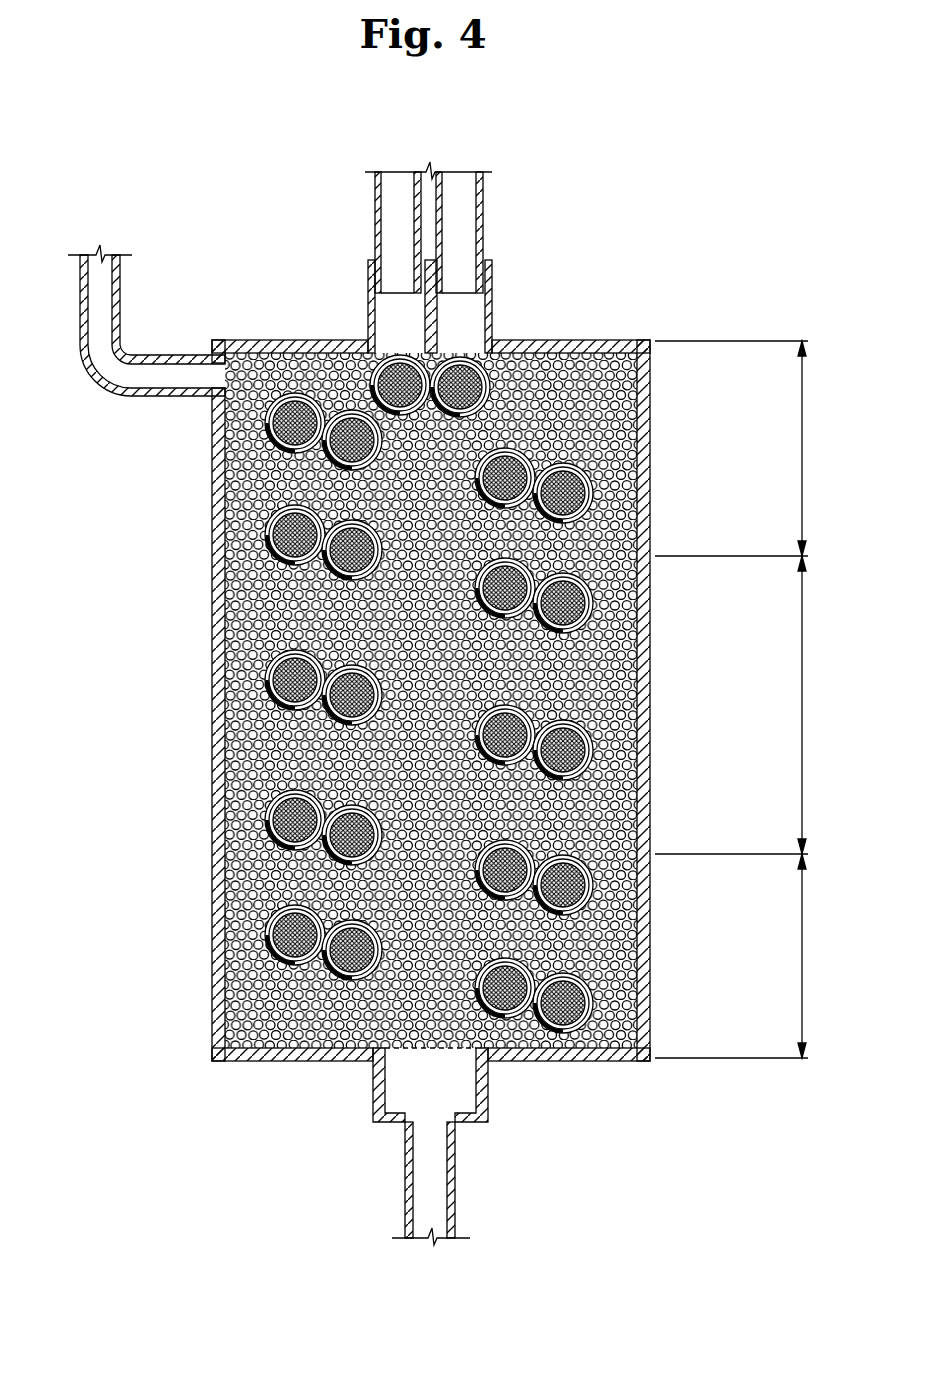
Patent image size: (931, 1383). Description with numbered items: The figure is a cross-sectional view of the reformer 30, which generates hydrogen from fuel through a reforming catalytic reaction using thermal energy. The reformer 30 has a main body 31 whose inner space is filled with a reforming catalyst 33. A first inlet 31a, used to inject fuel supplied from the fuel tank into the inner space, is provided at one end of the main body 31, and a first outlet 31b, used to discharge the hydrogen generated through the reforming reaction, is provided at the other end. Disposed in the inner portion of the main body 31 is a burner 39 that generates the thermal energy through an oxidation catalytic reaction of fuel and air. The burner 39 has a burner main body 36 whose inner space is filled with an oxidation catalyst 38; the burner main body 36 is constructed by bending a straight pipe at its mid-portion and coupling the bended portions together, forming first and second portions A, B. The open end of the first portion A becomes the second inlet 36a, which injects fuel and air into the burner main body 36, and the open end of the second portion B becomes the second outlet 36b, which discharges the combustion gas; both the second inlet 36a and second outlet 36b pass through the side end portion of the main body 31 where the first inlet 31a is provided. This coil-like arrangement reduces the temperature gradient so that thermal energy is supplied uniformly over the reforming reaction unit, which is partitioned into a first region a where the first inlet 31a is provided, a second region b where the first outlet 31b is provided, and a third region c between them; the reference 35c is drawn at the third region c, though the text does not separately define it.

The reformer 30 is at (441, 131).
The main body 31 is at (648, 792).
The first inlet 31a is at (186, 414).
The first outlet 31b is at (388, 1133).
The second inlet 36a is at (363, 252).
The second outlet 36b is at (499, 252).
The burner main body 36 is at (555, 403).
The first portion A is at (420, 417).
The second portion B is at (490, 386).
The oxidation catalyst 38 is at (640, 492).
The middle reaction zone 35c is at (652, 733).
The reforming catalyst 33 is at (648, 960).
The burner 39 is at (322, 459).
The first region a is at (811, 448).
The third region c is at (810, 705).
The second region b is at (811, 956).